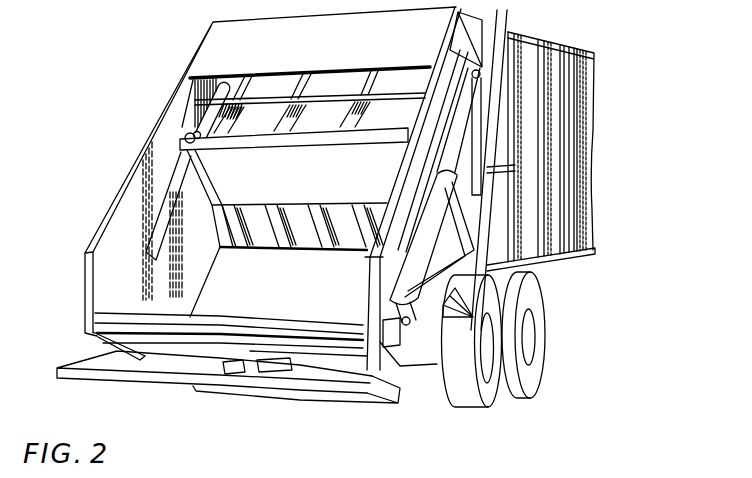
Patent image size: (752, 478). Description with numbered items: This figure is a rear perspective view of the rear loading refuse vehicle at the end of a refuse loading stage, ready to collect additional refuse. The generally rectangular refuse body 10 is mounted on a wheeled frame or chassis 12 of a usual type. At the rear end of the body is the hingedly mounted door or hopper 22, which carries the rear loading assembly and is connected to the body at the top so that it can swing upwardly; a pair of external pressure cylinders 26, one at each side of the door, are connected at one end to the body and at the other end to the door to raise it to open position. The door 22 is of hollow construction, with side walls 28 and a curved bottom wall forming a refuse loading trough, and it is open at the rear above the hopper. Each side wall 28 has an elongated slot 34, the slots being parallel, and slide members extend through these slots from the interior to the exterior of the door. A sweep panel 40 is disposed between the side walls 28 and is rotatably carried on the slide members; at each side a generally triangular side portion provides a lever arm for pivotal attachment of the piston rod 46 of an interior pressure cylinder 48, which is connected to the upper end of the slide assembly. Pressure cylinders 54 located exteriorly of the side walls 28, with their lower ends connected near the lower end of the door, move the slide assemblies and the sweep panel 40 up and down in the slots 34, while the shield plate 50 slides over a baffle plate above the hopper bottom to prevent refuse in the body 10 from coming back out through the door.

The refuse body 10 is at (594, 133).
The wheeled frame or chassis 12 is at (577, 254).
The door or hopper 22 is at (145, 145).
The external pressure cylinders 26 is at (479, 79).
The side walls 28 is at (117, 238).
The elongated slot 34 is at (157, 226).
The sweep panel 40 is at (300, 227).
The piston rod 46 is at (192, 112).
The pressure cylinder 48 is at (227, 83).
The shield plate 50 is at (328, 92).
The pressure cylinders 54 is at (435, 365).